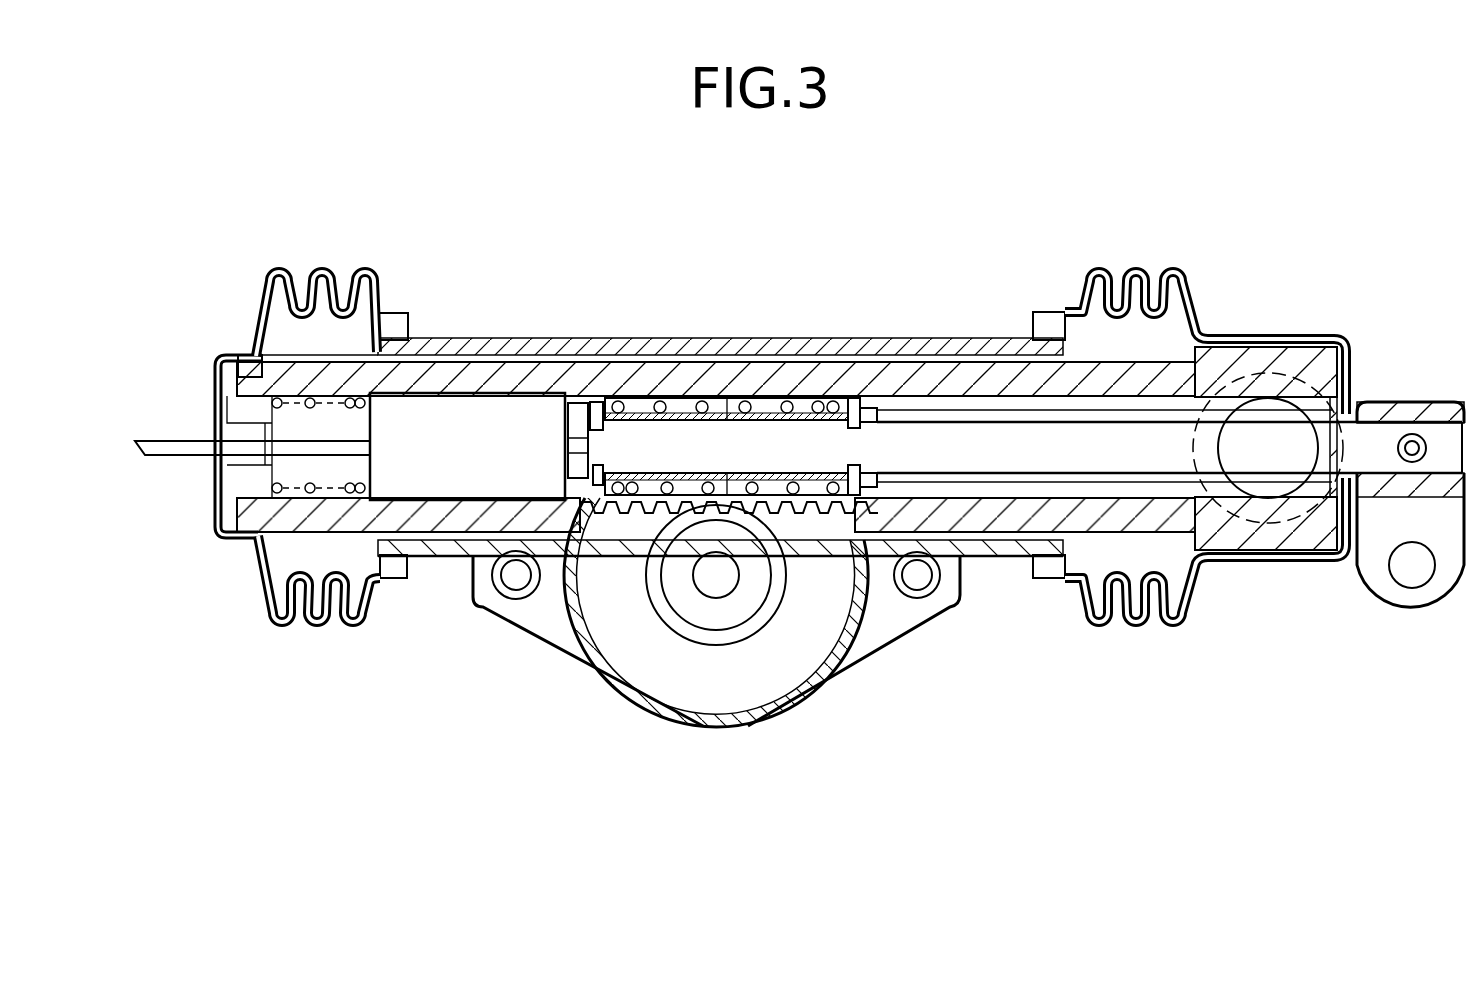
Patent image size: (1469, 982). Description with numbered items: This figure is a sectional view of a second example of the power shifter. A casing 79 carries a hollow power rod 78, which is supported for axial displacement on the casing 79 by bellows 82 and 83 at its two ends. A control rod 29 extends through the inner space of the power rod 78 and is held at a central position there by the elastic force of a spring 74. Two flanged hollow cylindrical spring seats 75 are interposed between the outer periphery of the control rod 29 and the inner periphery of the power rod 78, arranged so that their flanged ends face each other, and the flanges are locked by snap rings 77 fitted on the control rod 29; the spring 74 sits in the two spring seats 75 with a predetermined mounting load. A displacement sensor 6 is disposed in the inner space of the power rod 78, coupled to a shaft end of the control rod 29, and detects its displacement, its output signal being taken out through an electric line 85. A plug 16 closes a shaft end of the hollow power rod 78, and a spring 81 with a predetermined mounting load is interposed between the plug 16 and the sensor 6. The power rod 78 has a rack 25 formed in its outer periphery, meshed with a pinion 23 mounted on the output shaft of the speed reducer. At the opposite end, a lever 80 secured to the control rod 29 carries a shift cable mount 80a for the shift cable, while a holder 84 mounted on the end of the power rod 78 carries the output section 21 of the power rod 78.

The displacement sensor 6 is at (447, 423).
The plug 16 is at (238, 410).
The output section 21 is at (1283, 408).
The pinion 23 is at (727, 580).
The rack 25 is at (617, 500).
The control rod 29 is at (1060, 462).
The spring 74 is at (661, 400).
The spring seats 75 is at (850, 400).
The snap rings 77 is at (592, 408).
The power rod 78 is at (746, 388).
The casing 79 is at (512, 345).
The lever 80 is at (1438, 603).
The shift cable mount 80a is at (1411, 578).
The spring 81 is at (312, 492).
The bellows 82 is at (282, 623).
The bellows 83 is at (1170, 272).
The holder 84 is at (1247, 350).
The electric line 85 is at (170, 455).